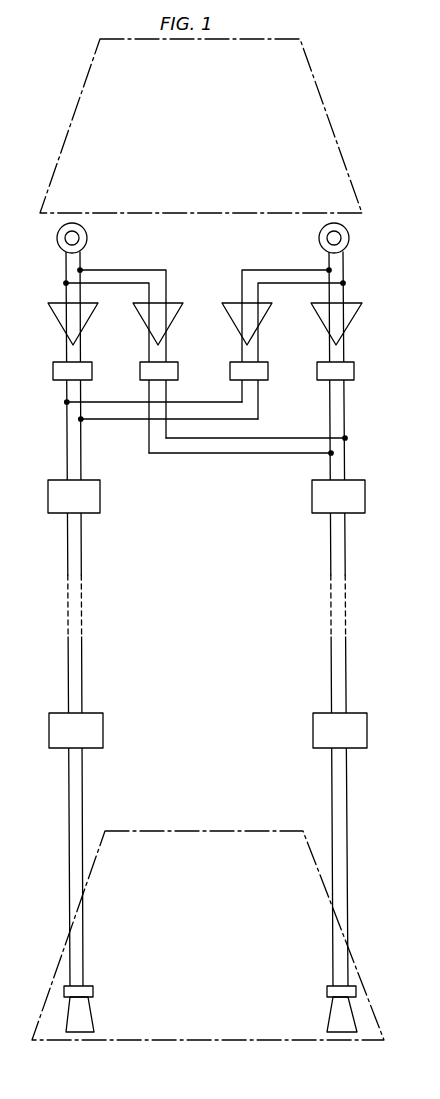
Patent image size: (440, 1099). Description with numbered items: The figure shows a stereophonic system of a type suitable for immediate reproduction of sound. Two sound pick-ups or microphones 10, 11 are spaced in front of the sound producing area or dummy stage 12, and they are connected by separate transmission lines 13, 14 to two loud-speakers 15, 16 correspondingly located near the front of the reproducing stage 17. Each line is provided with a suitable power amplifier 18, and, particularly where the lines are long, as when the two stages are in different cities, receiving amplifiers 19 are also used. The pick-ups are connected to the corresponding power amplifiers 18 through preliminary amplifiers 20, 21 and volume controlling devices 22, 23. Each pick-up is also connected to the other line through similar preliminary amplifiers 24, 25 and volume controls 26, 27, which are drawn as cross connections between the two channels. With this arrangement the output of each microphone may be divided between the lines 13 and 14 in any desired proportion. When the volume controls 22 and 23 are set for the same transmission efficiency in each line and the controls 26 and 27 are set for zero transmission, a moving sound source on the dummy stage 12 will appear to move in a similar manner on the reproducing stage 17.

The sound pick-up or microphone 10 is at (57, 239).
The sound pick-up or microphone 11 is at (349, 239).
The sound producing area or dummy stage 12 is at (201, 126).
The transmission line 13 is at (75, 557).
The transmission line 14 is at (338, 558).
The loud-speaker 15 is at (94, 1017).
The loud-speaker 16 is at (326, 1017).
The reproducing stage 17 is at (208, 935).
The power amplifier 18 is at (100, 497).
The receiving amplifier 19 is at (103, 731).
The preliminary amplifier 20 is at (88, 321).
The preliminary amplifier 21 is at (349, 330).
The volume controlling device 22 is at (92, 371).
The volume controlling device 23 is at (354, 371).
The preliminary amplifier 24 is at (173, 321).
The preliminary amplifier 25 is at (262, 321).
The volume control 26 is at (178, 371).
The volume control 27 is at (268, 371).